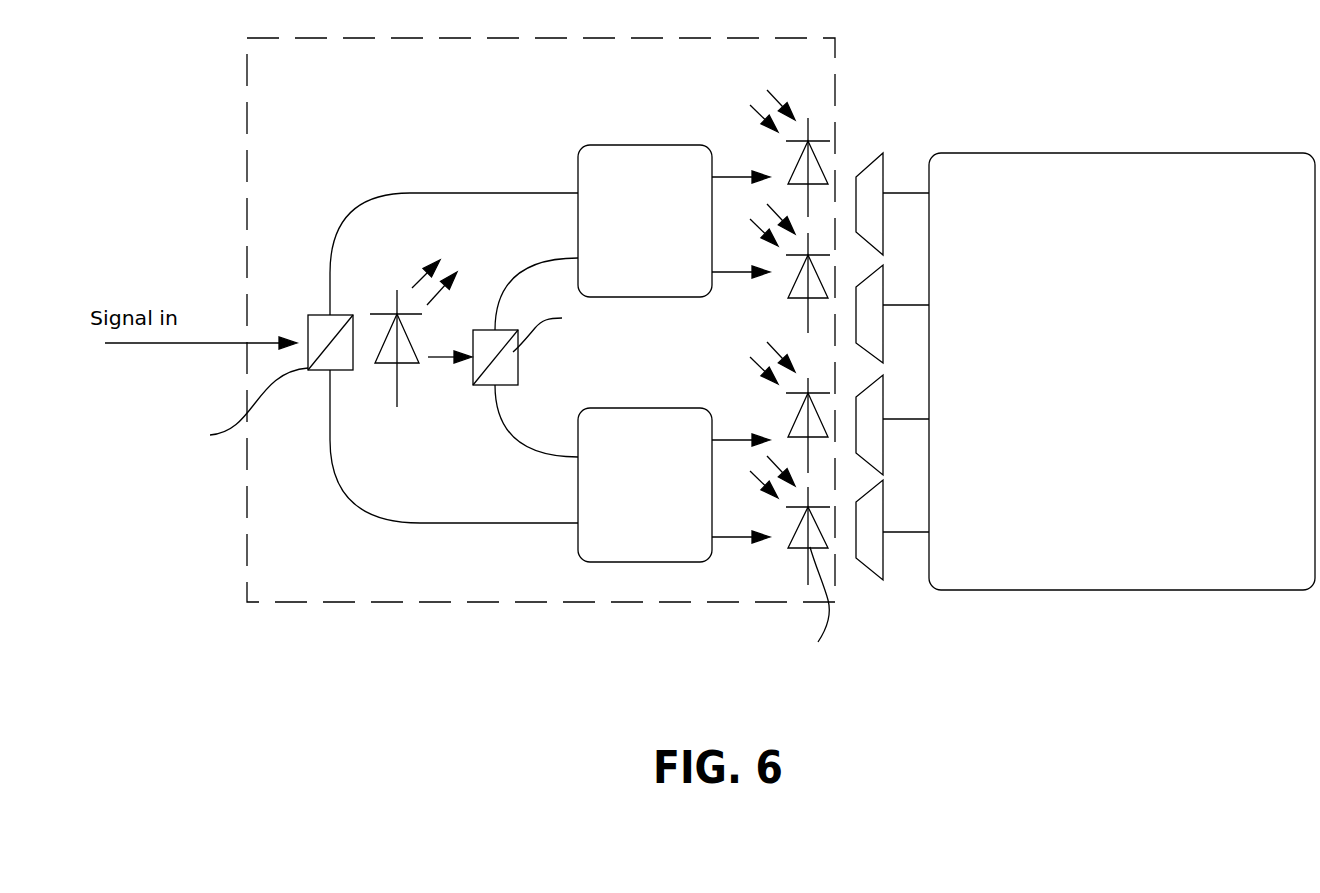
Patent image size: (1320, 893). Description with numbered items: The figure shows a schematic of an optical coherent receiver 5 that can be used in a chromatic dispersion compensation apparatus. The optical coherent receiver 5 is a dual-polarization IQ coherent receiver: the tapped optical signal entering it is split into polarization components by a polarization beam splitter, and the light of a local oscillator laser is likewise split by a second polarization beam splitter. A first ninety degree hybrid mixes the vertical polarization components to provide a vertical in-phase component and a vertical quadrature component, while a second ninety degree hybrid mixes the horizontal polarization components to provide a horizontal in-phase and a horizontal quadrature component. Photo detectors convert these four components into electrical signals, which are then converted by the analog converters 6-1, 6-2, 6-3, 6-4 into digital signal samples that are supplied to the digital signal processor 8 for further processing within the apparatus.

The optical coherent receiver 5 is at (496, 353).
The analog converter 6-1 is at (885, 182).
The analog converter 6-2 is at (885, 294).
The analog converter 6-3 is at (885, 404).
The analog converter 6-4 is at (885, 509).
The digital signal processor 8 is at (1122, 371).